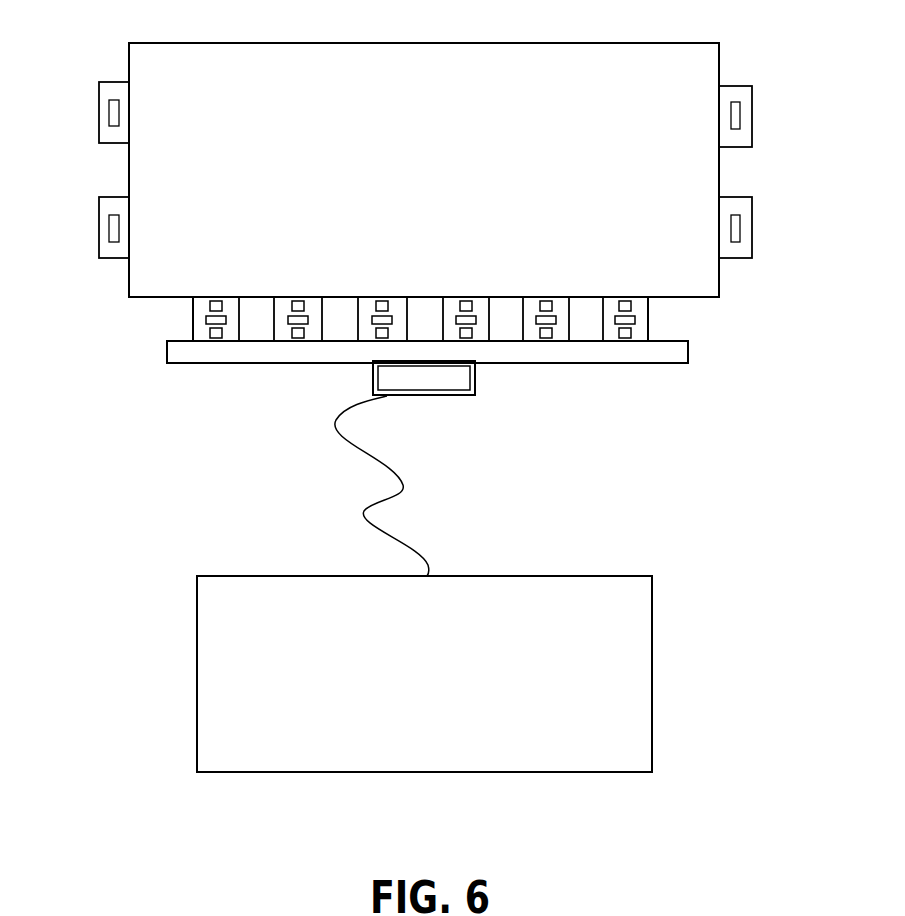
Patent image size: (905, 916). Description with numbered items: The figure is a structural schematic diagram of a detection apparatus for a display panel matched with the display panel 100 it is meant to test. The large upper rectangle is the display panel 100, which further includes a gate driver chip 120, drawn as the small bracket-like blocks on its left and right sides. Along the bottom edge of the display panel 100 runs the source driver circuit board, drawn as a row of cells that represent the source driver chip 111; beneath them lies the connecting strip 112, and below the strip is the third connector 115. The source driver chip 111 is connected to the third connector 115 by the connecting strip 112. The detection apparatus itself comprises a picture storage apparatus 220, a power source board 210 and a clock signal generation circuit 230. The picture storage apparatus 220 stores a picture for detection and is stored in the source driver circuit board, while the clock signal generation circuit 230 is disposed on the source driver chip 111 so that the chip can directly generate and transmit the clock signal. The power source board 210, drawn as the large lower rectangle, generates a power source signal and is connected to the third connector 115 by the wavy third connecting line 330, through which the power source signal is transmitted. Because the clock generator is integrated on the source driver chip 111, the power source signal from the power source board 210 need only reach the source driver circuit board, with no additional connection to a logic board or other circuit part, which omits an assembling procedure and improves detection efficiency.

The display panel 100 is at (129, 171).
The gate driver chip 120 is at (113, 82).
The source driver chip 111 is at (193, 318).
The connecting strip 112 is at (168, 352).
The third connector 115 is at (373, 379).
The picture storage apparatus 220 is at (632, 306).
The clock signal generation circuit 230 is at (632, 332).
The third connecting line 330 is at (364, 511).
The power source board 210 is at (197, 682).